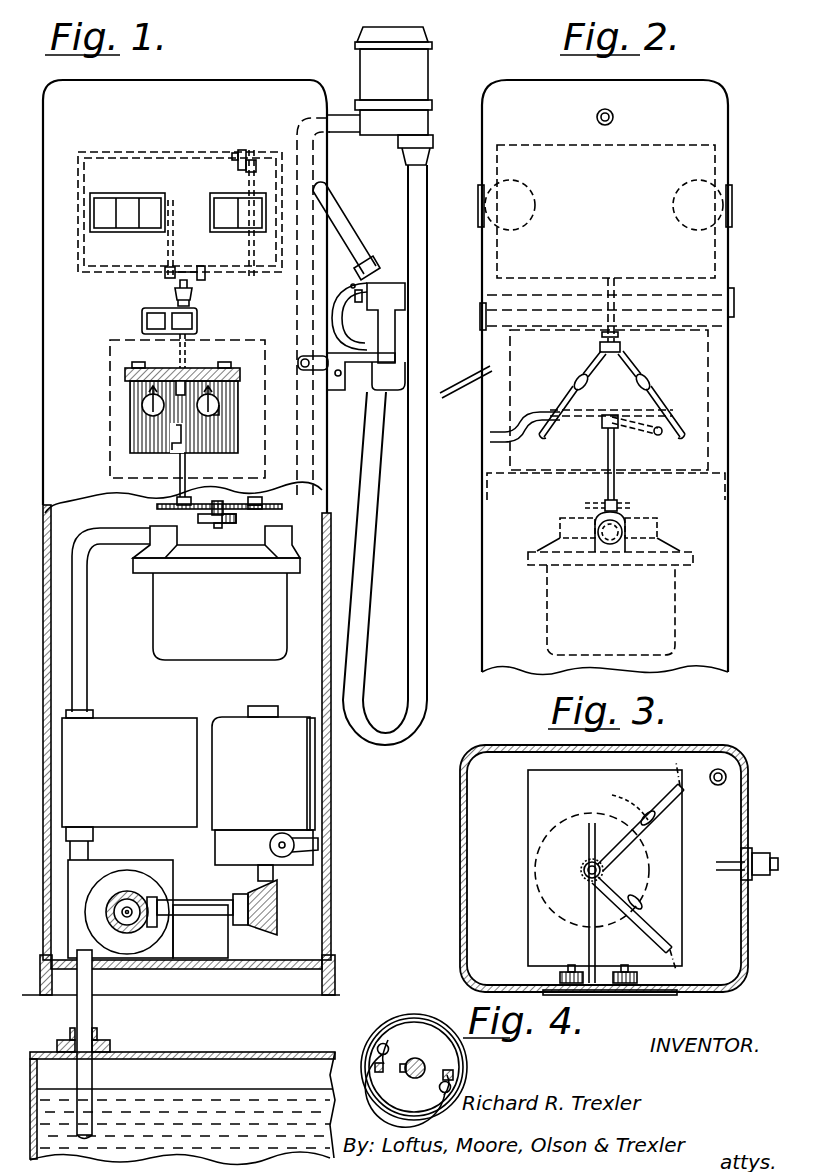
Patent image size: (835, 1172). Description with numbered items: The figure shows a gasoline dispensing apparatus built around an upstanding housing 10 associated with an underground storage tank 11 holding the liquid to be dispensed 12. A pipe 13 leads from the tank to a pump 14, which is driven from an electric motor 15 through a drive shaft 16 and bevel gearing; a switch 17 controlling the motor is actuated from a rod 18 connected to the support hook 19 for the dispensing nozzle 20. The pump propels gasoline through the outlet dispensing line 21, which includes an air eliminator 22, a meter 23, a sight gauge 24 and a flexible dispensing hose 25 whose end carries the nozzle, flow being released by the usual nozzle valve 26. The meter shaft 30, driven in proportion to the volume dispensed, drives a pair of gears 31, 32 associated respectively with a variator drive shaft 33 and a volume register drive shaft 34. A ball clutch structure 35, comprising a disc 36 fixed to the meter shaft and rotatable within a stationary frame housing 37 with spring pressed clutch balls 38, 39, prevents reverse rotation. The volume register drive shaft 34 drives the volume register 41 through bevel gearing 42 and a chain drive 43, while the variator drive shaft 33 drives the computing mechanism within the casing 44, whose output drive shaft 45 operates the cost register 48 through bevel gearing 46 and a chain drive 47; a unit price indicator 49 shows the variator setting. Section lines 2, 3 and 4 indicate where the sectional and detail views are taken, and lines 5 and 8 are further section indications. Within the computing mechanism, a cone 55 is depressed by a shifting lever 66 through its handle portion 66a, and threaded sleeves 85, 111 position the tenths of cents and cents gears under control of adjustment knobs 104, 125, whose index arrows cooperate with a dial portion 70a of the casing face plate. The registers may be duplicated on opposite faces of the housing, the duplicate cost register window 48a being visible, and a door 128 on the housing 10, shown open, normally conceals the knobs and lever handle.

In FIG. 1, the section line 2— 2 is at (333, 80).
In FIG. 1, the section line 3— 3 is at (43, 337).
In FIG. 1, the section line 4— 4 is at (190, 518).
In FIG. 3, the section line 5- 5 is at (660, 761).
In FIG. 2, the section line 8- 8 is at (773, 347).
In FIG. 1, the housing 10 is at (43, 730).
In FIG. 2, the housing 10 is at (690, 90).
In FIG. 3, the housing 10 is at (460, 815).
In FIG. 1, the underground storage tank 11 is at (180, 1052).
In FIG. 1, the liquid to be dispensed 12 is at (238, 1090).
In FIG. 1, the pipe 13 is at (92, 1022).
In FIG. 1, the pump 14 is at (133, 872).
In FIG. 1, the electric motor 15 is at (225, 722).
In FIG. 1, the drive shaft 16 is at (192, 897).
In FIG. 1, the switch 17 is at (190, 299).
In FIG. 1, the rod 18 is at (307, 770).
In FIG. 2, the rod 18 is at (492, 288).
In FIG. 1, the support hook 19 is at (358, 390).
In FIG. 3, the support hook 19 is at (766, 850).
In FIG. 1, the dispensing nozzle 20 is at (386, 283).
In FIG. 1, the outlet dispensing line 21 is at (62, 843).
In FIG. 1, the air eliminator 22 is at (133, 722).
In FIG. 1, the meter 23 is at (165, 622).
In FIG. 2, the meter 23 is at (545, 630).
In FIG. 1, the sight gauge 24 is at (410, 58).
In FIG. 1, the flexible dispensing hose 25 is at (425, 608).
In FIG. 1, the nozzle valve 26 is at (355, 258).
In FIG. 1, the meter shaft 30 is at (213, 520).
In FIG. 4, the meter shaft 30 is at (415, 1058).
In FIG. 1, the gear 31 is at (157, 505).
In FIG. 1, the gear 32 is at (262, 503).
In FIG. 2, the gear 32 is at (638, 509).
In FIG. 1, the variator drive shaft 33 is at (176, 492).
In FIG. 2, the variator drive shaft 33 is at (607, 452).
In FIG. 1, the volume register drive shaft 34 is at (262, 497).
In FIG. 2, the volume register drive shaft 34 is at (605, 484).
In FIG. 3, the volume register drive shaft 34 is at (668, 870).
In FIG. 1, the ball clutch structure 35 is at (231, 536).
In FIG. 4, the ball clutch structure 35 is at (480, 1064).
In FIG. 4, the disc 36 is at (402, 1098).
In FIG. 4, the stationary frame housing 37 is at (385, 1025).
In FIG. 4, the clutch ball 38 is at (451, 1088).
In FIG. 4, the clutch ball 39 is at (378, 1048).
In FIG. 1, the volume register 41 is at (238, 210).
In FIG. 2, the volume register 41 is at (732, 205).
In FIG. 1, the bevel gearing 42 is at (250, 148).
In FIG. 1, the chain drive 43 is at (297, 168).
In FIG. 1, the casing 44 is at (110, 357).
In FIG. 2, the casing 44 is at (712, 415).
In FIG. 3, the casing 44 is at (468, 797).
In FIG. 1, the output drive shaft 45 is at (172, 292).
In FIG. 1, the bevel gearing 46 is at (186, 268).
In FIG. 1, the chain drive 47 is at (165, 253).
In FIG. 1, the cost register 48 is at (156, 205).
In FIG. 2, the cost indicator window 48a is at (482, 205).
In FIG. 1, the unit price indicator 49 is at (142, 320).
In FIG. 2, the cone 55 is at (627, 402).
In FIG. 3, the cone 55 is at (548, 891).
In FIG. 3, the shifting lever 66 is at (588, 838).
In FIG. 1, the handle portion 66a is at (176, 430).
In FIG. 2, the handle portion 66a is at (490, 437).
In FIG. 3, the handle portion 66a is at (598, 984).
In FIG. 1, the dial portion 70a is at (178, 392).
In FIG. 3, the threaded sleeve 85 is at (642, 936).
In FIG. 1, the adjustment knob 104 is at (213, 415).
In FIG. 3, the adjustment knob 104 is at (640, 980).
In FIG. 3, the threaded sleeve 111 is at (628, 797).
In FIG. 1, the adjustment knob 125 is at (145, 405).
In FIG. 3, the adjustment knob 125 is at (574, 986).
In FIG. 1, the door 128 is at (204, 372).
In FIG. 2, the door 128 is at (470, 380).